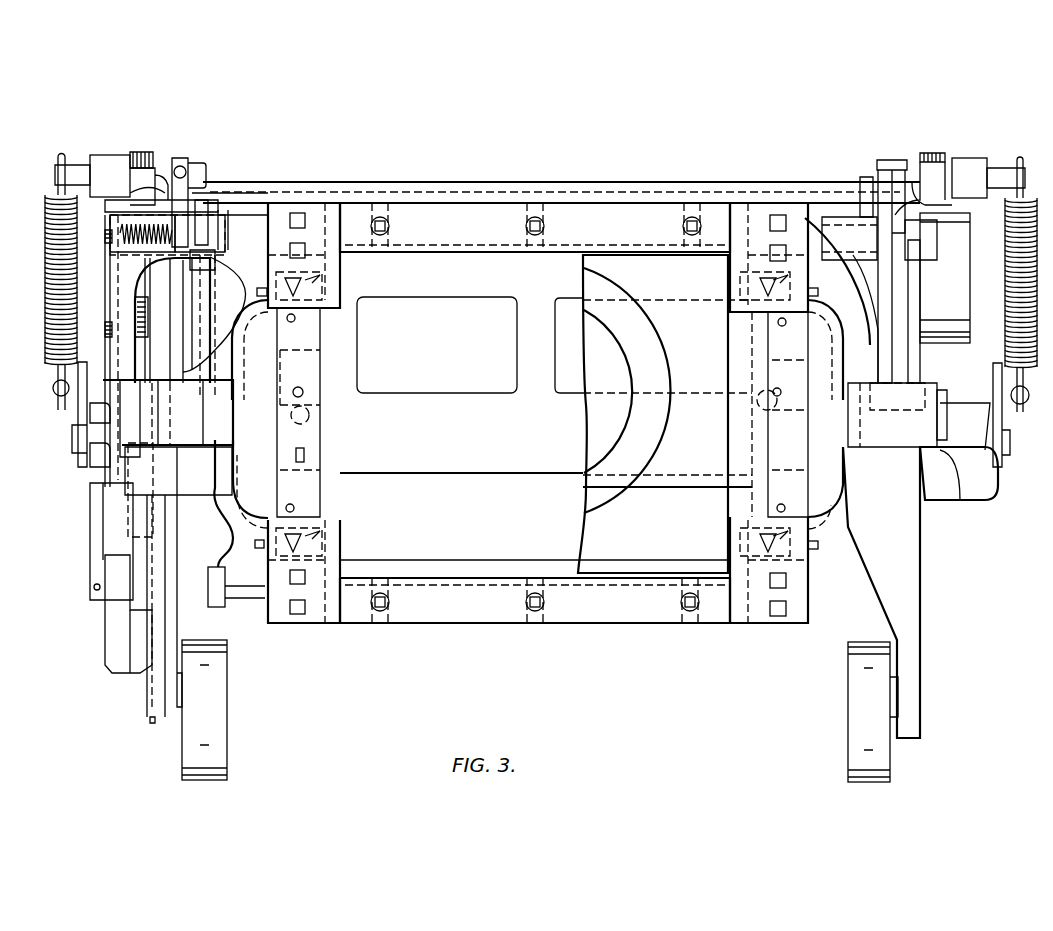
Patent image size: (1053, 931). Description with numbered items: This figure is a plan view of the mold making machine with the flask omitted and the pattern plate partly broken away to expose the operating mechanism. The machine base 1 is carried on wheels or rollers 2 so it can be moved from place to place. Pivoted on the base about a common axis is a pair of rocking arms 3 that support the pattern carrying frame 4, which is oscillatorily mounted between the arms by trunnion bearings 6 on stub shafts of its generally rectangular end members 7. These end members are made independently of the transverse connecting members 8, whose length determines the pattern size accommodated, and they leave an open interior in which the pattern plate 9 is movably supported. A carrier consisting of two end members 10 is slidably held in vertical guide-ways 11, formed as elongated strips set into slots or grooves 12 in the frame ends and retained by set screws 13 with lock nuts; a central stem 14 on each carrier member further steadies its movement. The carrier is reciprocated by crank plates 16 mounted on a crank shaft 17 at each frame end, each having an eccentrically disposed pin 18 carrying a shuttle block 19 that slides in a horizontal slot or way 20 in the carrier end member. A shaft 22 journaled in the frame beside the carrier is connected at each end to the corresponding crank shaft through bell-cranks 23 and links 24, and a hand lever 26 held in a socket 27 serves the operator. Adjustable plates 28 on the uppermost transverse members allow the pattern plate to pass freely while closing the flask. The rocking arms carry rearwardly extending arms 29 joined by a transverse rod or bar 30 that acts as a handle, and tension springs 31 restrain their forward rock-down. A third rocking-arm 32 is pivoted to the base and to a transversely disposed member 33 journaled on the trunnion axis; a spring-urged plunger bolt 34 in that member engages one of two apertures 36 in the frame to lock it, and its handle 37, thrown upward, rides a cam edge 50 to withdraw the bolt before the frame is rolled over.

The machine base 1 is at (466, 363).
The wheels or rollers 2 is at (115, 160).
The rocking arms 3 is at (115, 420).
The pattern carrying frame 4 is at (412, 578).
The trunnion bearings 6 is at (880, 435).
The end members of the frame 7 is at (218, 123).
The transverse connecting members 8 is at (588, 205).
The pattern plate 9 is at (582, 540).
The end members of the carrier 10 is at (322, 342).
The vertical guide-ways 11 is at (308, 283).
The slots or grooves 12 is at (307, 298).
The set screws 13 is at (255, 545).
The central stem 14 is at (755, 412).
The crank plates 16 is at (812, 482).
The crank shaft 17 is at (150, 385).
The eccentrically disposed pin 18 is at (250, 400).
The shuttle block 19 is at (290, 378).
The slot or way 20 is at (330, 458).
The shaft 22 is at (818, 235).
The bell-cranks 23 is at (180, 168).
The links 24 is at (195, 235).
The hand lever 26 is at (145, 692).
The socket 27 is at (150, 300).
The adjustable plates 28 is at (460, 210).
The rearwardly extending arms 29 is at (195, 265).
The transverse rod or bar 30 is at (665, 190).
The tension springs 31 is at (1008, 296).
The third rocking-arm 32 is at (115, 640).
The transversely disposed member 33 is at (165, 390).
The plunger bolt 34 is at (105, 235).
The apertures 36 is at (265, 257).
The handle 37 is at (180, 225).
The cam edge 50 is at (181, 207).